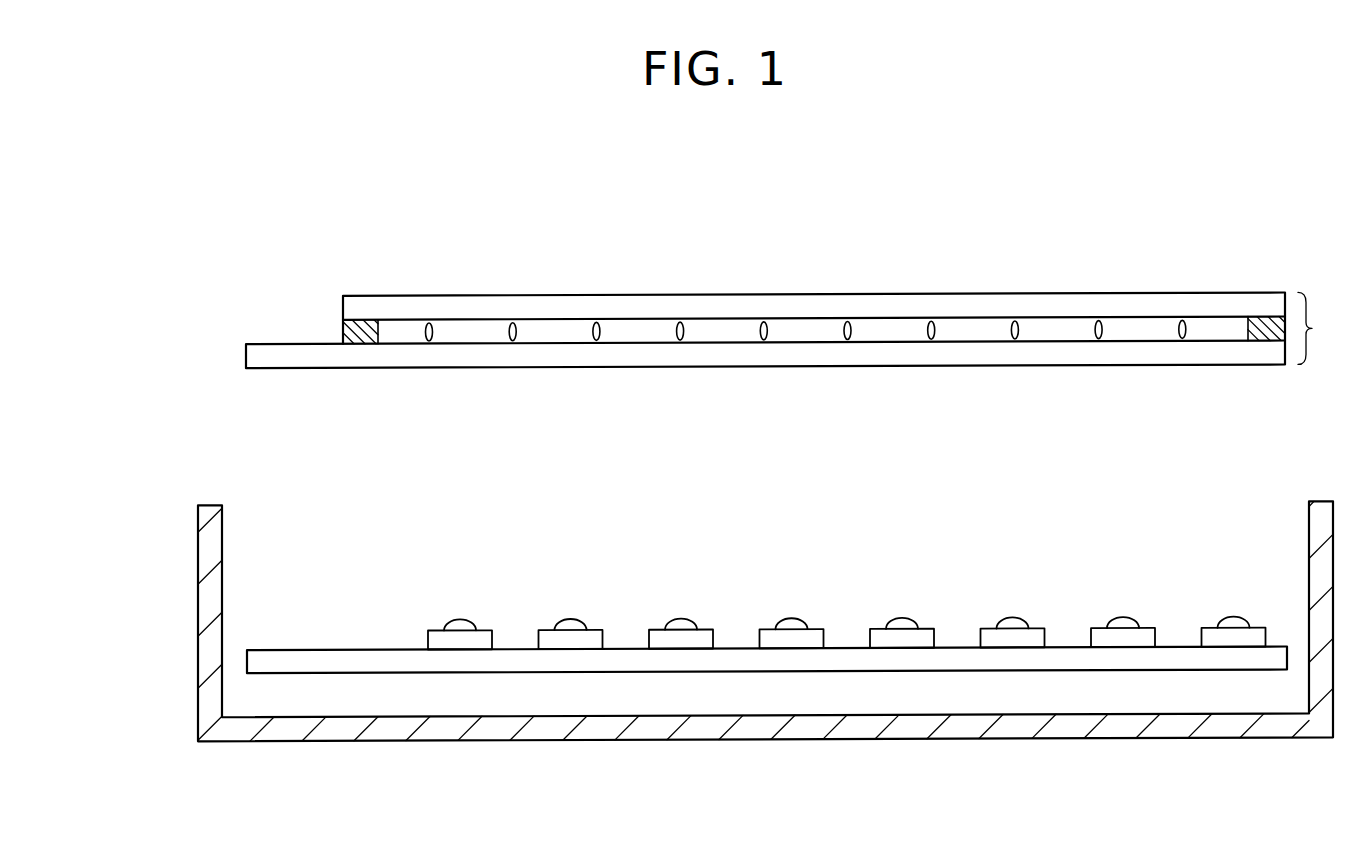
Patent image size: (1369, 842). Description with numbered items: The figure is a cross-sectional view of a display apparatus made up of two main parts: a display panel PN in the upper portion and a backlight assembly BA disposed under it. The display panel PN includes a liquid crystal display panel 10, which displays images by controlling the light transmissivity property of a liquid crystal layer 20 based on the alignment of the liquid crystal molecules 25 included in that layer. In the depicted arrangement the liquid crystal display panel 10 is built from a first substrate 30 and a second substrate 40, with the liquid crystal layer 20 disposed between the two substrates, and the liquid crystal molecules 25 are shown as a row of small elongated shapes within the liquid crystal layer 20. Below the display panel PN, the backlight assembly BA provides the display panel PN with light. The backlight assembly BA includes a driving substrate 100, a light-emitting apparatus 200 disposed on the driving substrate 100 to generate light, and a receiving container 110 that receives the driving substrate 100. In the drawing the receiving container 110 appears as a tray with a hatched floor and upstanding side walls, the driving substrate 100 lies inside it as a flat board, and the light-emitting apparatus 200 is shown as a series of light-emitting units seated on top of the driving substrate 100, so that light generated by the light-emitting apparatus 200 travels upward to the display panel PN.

The liquid crystal display panel 10 is at (1322, 328).
The liquid crystal layer 20 is at (971, 329).
The liquid crystal molecules 25 is at (770, 330).
The first substrate 30 is at (885, 349).
The second substrate 40 is at (738, 306).
The driving substrate 100 is at (462, 661).
The receiving container 110 is at (337, 732).
The light-emitting apparatus 200 is at (611, 638).
The display panel PN is at (721, 296).
The backlight assembly BA is at (695, 664).